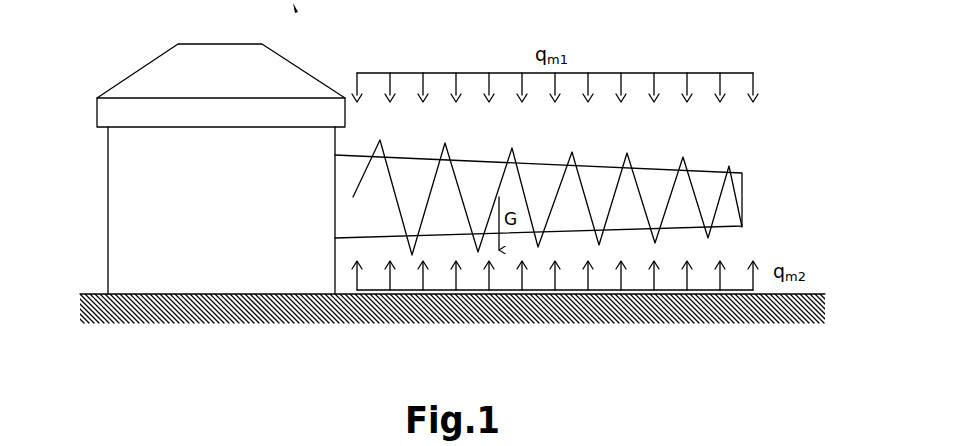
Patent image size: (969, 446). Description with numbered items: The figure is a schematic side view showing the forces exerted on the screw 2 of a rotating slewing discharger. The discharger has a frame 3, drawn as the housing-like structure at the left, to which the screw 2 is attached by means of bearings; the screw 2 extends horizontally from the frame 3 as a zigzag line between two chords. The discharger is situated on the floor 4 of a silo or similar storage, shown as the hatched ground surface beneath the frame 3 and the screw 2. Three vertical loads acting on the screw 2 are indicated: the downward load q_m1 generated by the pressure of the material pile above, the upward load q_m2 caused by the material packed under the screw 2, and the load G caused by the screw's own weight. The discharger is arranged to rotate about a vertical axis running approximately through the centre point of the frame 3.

The screw 2 is at (725, 207).
The frame 3 is at (134, 193).
The floor 4 is at (807, 305).